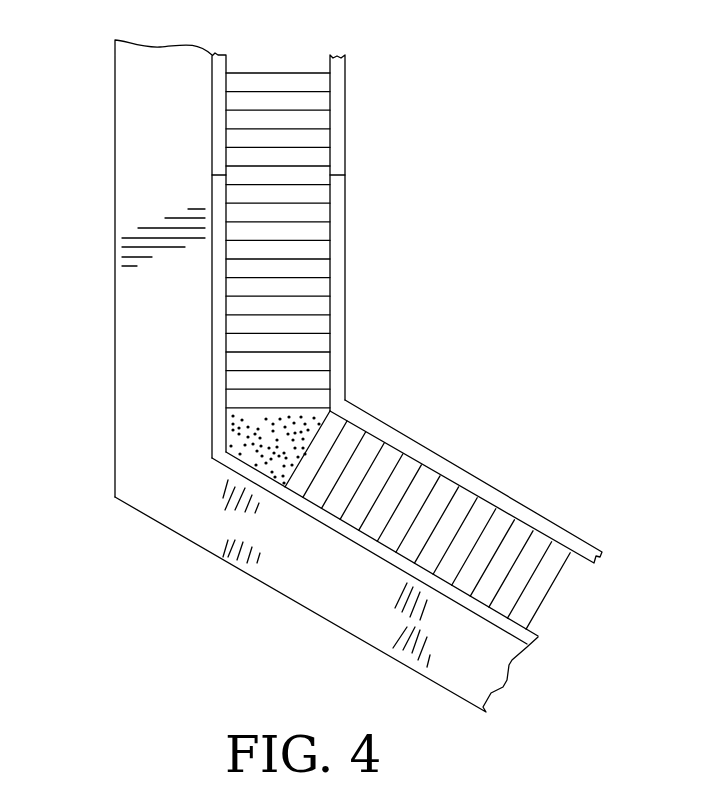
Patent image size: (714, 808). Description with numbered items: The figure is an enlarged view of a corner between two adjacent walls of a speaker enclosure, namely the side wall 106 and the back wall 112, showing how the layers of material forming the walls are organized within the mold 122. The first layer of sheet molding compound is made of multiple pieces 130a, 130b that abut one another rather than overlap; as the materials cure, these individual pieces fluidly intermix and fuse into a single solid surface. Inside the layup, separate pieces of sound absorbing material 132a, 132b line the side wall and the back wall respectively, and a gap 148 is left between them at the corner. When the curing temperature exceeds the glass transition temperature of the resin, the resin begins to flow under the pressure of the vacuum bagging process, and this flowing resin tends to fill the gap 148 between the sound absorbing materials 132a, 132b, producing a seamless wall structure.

The side wall 106 is at (383, 243).
The back wall 112 is at (550, 512).
The mold 122 is at (140, 157).
The first layer piece 130a is at (220, 97).
The first layer piece 130b is at (220, 281).
The sound absorbing material 132a is at (303, 153).
The sound absorbing material 132b is at (430, 510).
The gap 148 is at (268, 443).